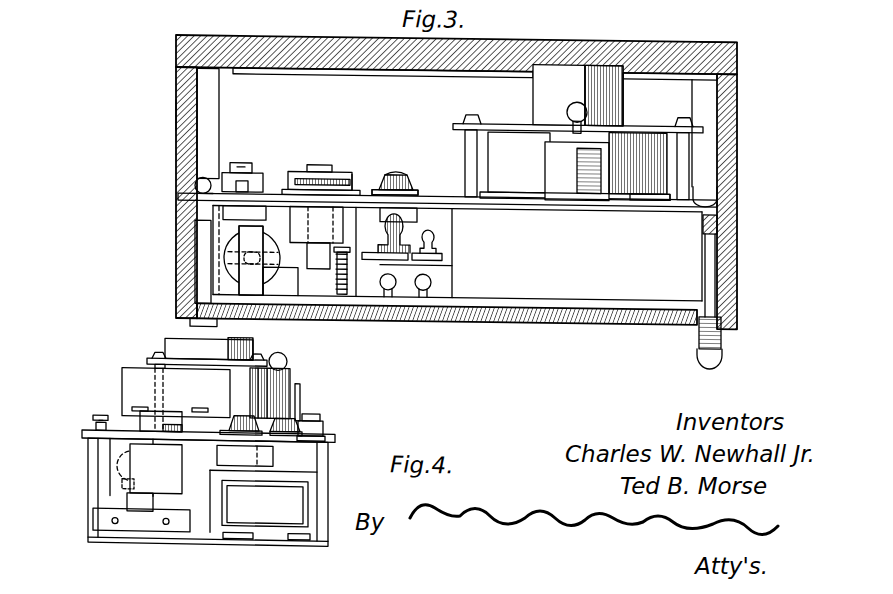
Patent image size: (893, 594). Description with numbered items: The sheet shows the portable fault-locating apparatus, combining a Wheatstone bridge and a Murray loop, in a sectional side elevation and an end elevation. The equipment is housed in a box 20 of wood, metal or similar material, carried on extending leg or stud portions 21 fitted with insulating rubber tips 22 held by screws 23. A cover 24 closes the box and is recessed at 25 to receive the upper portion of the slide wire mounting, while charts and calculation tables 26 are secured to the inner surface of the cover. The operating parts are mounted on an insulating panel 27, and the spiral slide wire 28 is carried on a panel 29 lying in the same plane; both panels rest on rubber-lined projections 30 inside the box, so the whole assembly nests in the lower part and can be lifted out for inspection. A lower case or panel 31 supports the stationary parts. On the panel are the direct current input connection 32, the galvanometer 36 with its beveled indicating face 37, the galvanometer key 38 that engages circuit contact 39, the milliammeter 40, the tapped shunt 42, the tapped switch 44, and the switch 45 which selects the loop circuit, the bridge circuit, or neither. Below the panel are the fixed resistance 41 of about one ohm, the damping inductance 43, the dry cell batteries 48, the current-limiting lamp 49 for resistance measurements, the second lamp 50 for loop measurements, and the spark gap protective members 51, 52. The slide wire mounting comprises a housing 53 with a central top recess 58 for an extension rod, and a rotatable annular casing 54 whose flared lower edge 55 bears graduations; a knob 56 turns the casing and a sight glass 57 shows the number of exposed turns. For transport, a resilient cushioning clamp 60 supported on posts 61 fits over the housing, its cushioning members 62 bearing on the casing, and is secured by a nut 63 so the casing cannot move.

In FIG. 3, the box 20 is at (185, 242).
In FIG. 3, the leg or stud portions 21 is at (190, 320).
In FIG. 3, the rubber tips 22 is at (722, 354).
In FIG. 3, the screws 23 is at (724, 336).
In FIG. 3, the cover 24 is at (190, 113).
In FIG. 3, the recess 25 is at (692, 40).
In FIG. 3, the charts and calculation tables 26 is at (247, 73).
In FIG. 3, the panel 27 is at (196, 192).
In FIG. 3, the slide wire 28 is at (645, 97).
In FIG. 3, the panel 29 is at (716, 200).
In FIG. 3, the projections 30 is at (196, 205).
In FIG. 3, the lower case or panel 31 is at (497, 300).
In FIG. 4, the lower case or panel 31 is at (140, 538).
In FIG. 4, the direct current input connection 32 is at (96, 425).
In FIG. 3, the galvanometer 36 is at (300, 168).
In FIG. 4, the galvanometer 36 is at (190, 436).
In FIG. 3, the indicating face 37 is at (353, 183).
In FIG. 4, the indicating face 37 is at (236, 414).
In FIG. 3, the galvanometer key 38 is at (235, 165).
In FIG. 4, the galvanometer key 38 is at (322, 412).
In FIG. 3, the circuit contact 39 is at (196, 178).
In FIG. 4, the circuit contact 39 is at (327, 430).
In FIG. 3, the milliammeter 40 is at (390, 170).
In FIG. 3, the fixed resistance 41 is at (347, 282).
In FIG. 4, the tapped shunt 42 is at (135, 415).
In FIG. 3, the damping inductance 43 is at (232, 258).
In FIG. 4, the damping inductance 43 is at (242, 505).
In FIG. 3, the tapped switch 44 is at (250, 170).
In FIG. 4, the tapped switch 44 is at (286, 404).
In FIG. 3, the switch 45 is at (424, 160).
In FIG. 4, the switch 45 is at (301, 410).
In FIG. 3, the dry cell batteries 48 is at (290, 286).
In FIG. 4, the dry cell batteries 48 is at (96, 516).
In FIG. 3, the lamp 49 is at (440, 242).
In FIG. 4, the lamp 49 is at (125, 480).
In FIG. 3, the lamp 50 is at (395, 231).
In FIG. 4, the lamp 50 is at (122, 462).
In FIG. 3, the spark gap member 51 is at (395, 288).
In FIG. 3, the spark gap member 52 is at (432, 279).
In FIG. 3, the housing 53 is at (535, 92).
In FIG. 3, the annular casing member 54 is at (628, 196).
In FIG. 3, the flared lower edge 55 is at (663, 196).
In FIG. 3, the knob 56 is at (578, 104).
In FIG. 3, the sight glass 57 is at (556, 160).
In FIG. 3, the recess 58 is at (600, 45).
In FIG. 3, the resilient cushioning clamp 60 is at (464, 110).
In FIG. 3, the posts 61 is at (464, 148).
In FIG. 3, the cushioning members 62 is at (512, 124).
In FIG. 3, the nut 63 is at (470, 118).